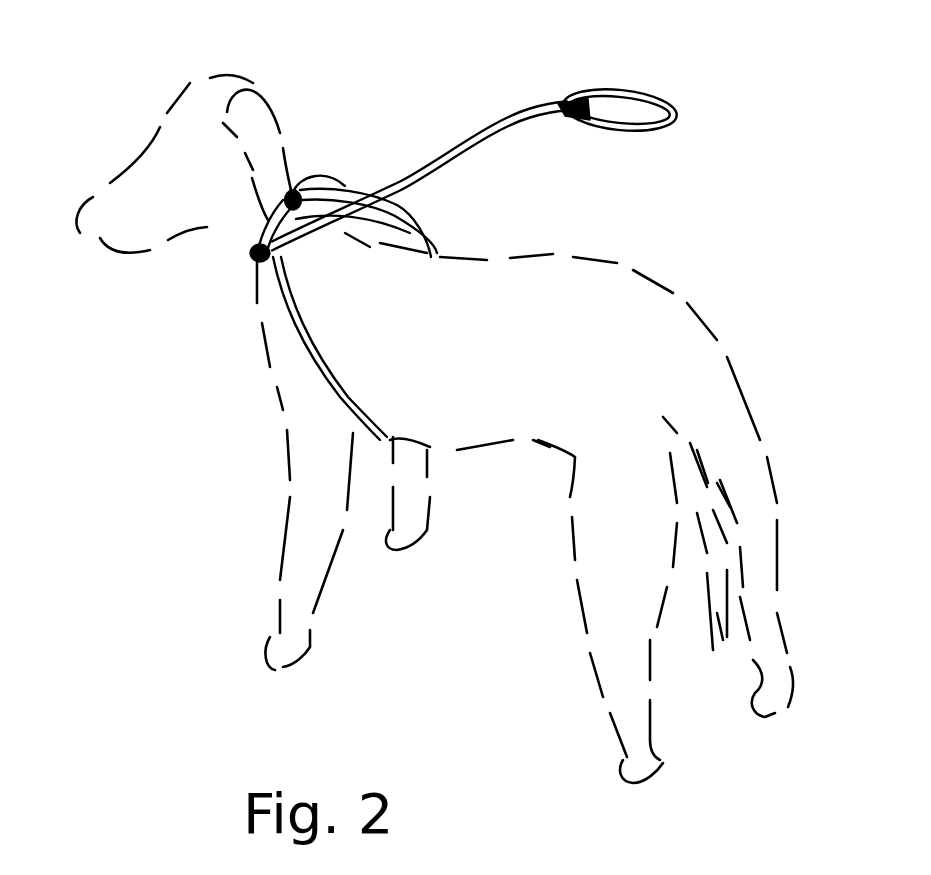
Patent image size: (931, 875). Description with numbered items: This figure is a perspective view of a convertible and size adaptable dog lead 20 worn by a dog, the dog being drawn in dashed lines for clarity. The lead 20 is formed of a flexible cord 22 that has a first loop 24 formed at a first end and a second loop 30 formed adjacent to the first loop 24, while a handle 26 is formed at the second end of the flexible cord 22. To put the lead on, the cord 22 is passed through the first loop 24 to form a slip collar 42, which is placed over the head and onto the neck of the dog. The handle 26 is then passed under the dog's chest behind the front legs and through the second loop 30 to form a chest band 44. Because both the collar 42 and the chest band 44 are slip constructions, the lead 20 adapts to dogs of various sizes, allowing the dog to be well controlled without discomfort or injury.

The convertible and size adaptable dog lead 20 is at (455, 72).
The flexible cord 22 is at (487, 140).
The first loop 24 is at (333, 180).
The handle 26 is at (653, 95).
The second loop 30 is at (243, 240).
The slip collar 42 is at (260, 260).
The chest band 44 is at (313, 385).